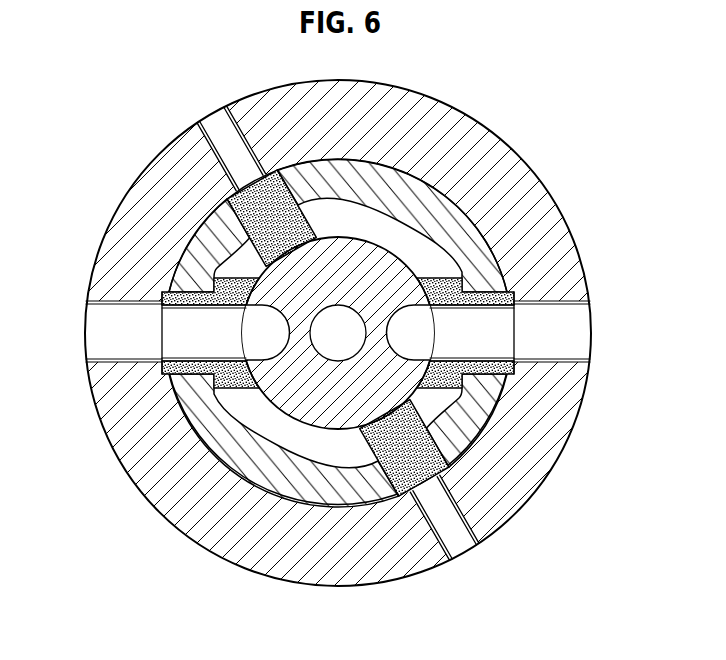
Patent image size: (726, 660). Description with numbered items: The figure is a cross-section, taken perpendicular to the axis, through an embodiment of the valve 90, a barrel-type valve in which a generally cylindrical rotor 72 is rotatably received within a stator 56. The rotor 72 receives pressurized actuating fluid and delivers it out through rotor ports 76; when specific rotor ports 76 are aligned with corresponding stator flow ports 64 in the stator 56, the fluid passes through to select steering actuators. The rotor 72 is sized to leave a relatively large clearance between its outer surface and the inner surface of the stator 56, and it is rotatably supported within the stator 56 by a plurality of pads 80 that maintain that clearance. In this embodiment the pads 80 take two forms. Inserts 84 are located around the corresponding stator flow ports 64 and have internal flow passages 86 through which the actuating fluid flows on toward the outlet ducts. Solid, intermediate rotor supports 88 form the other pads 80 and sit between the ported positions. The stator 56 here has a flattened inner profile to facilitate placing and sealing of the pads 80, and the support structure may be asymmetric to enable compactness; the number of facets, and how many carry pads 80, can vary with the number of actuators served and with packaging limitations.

The valve 90 is at (136, 145).
The stator 56 is at (343, 131).
The stator flow port 64 is at (105, 330).
The rotor 72 is at (326, 282).
The rotor port 76 is at (252, 344).
The pad 80 is at (434, 263).
The insert 84 is at (320, 212).
The internal flow passage 86 is at (190, 317).
The intermediate rotor support 88 is at (254, 227).